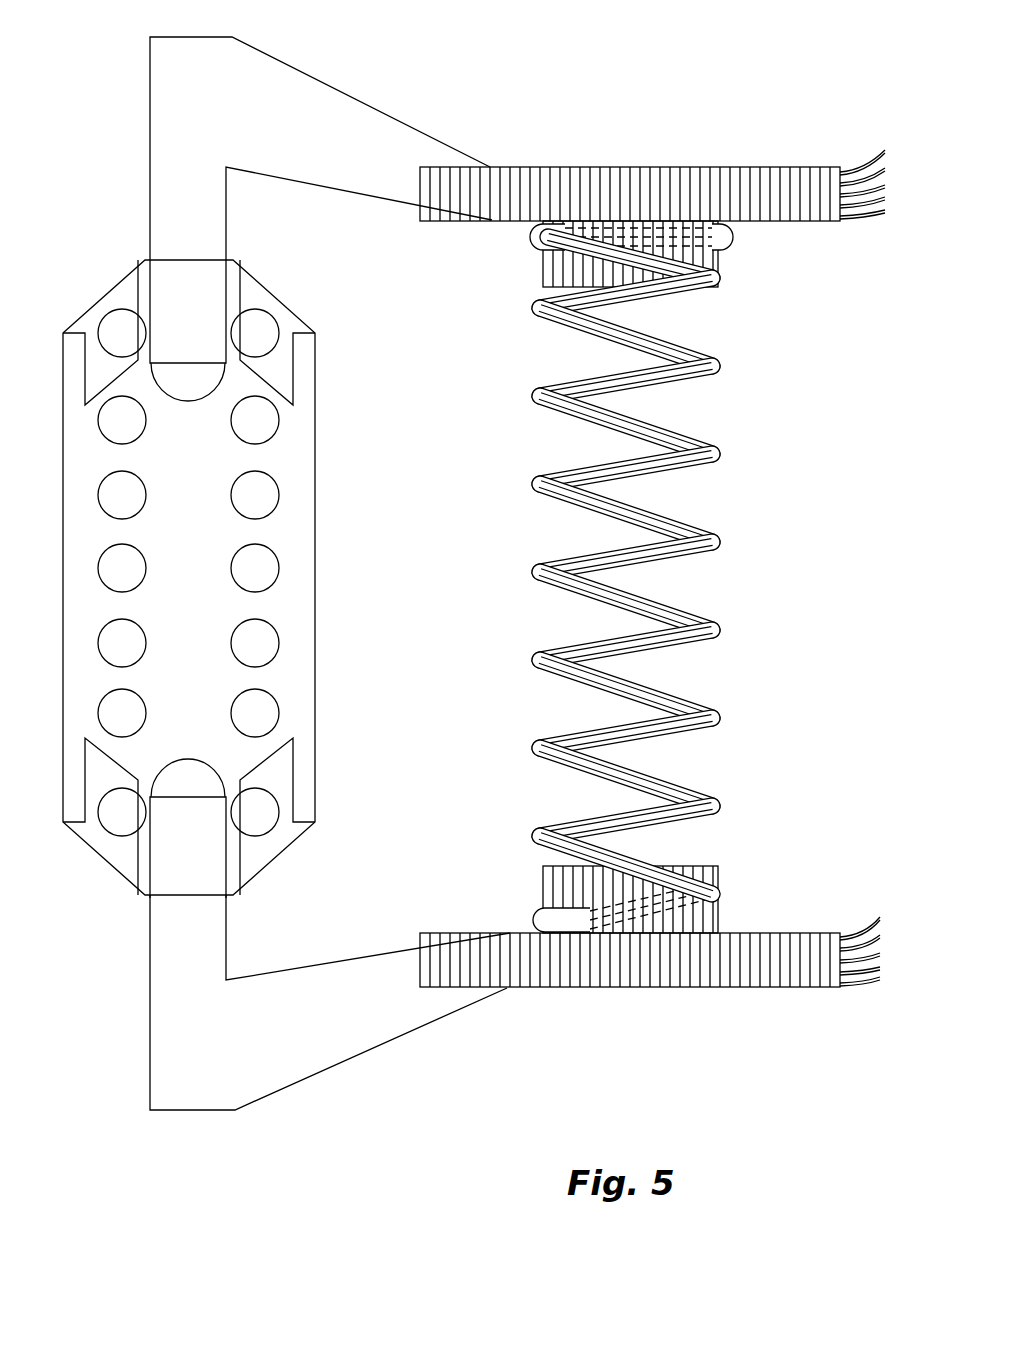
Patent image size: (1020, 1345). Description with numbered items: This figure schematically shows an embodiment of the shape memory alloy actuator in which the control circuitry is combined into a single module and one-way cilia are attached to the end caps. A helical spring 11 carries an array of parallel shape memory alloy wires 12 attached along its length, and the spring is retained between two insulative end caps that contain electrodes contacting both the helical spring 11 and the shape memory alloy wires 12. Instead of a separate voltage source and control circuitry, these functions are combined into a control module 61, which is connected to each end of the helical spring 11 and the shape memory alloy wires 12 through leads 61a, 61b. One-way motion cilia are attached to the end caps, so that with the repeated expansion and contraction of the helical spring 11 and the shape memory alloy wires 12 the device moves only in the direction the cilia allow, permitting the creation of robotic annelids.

The helical spring 11 is at (631, 578).
The shape memory alloy wires 12 is at (567, 421).
The control module 61 is at (297, 683).
The lead 61a is at (298, 1053).
The lead 61b is at (275, 82).